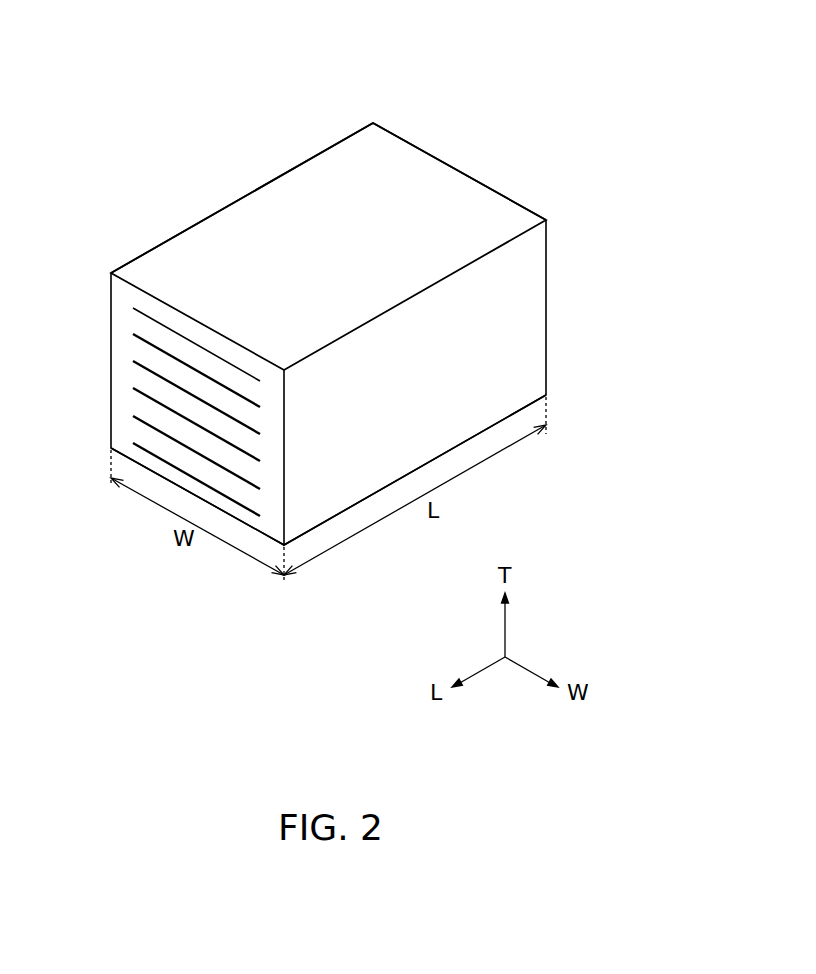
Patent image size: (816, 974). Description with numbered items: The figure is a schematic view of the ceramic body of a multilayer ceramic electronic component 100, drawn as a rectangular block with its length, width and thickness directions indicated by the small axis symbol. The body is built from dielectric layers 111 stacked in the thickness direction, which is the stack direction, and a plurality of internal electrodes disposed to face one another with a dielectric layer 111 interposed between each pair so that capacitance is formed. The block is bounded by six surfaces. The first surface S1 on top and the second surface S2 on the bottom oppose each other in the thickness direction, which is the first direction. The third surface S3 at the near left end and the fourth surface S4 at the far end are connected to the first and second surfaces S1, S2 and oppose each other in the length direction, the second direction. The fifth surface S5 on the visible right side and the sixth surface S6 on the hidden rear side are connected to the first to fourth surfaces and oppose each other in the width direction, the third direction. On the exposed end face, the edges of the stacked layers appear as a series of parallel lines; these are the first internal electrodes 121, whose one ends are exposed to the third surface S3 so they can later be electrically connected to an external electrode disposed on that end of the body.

The multilayer ceramic electronic component 100 is at (134, 23).
The dielectric layers 111 is at (135, 352).
The first internal electrodes 121 is at (135, 308).
The first surface S1 is at (329, 185).
The second surface S2 is at (336, 498).
The third surface S3 is at (190, 467).
The fourth surface S4 is at (442, 197).
The fifth surface S5 is at (526, 321).
The sixth surface S6 is at (172, 264).